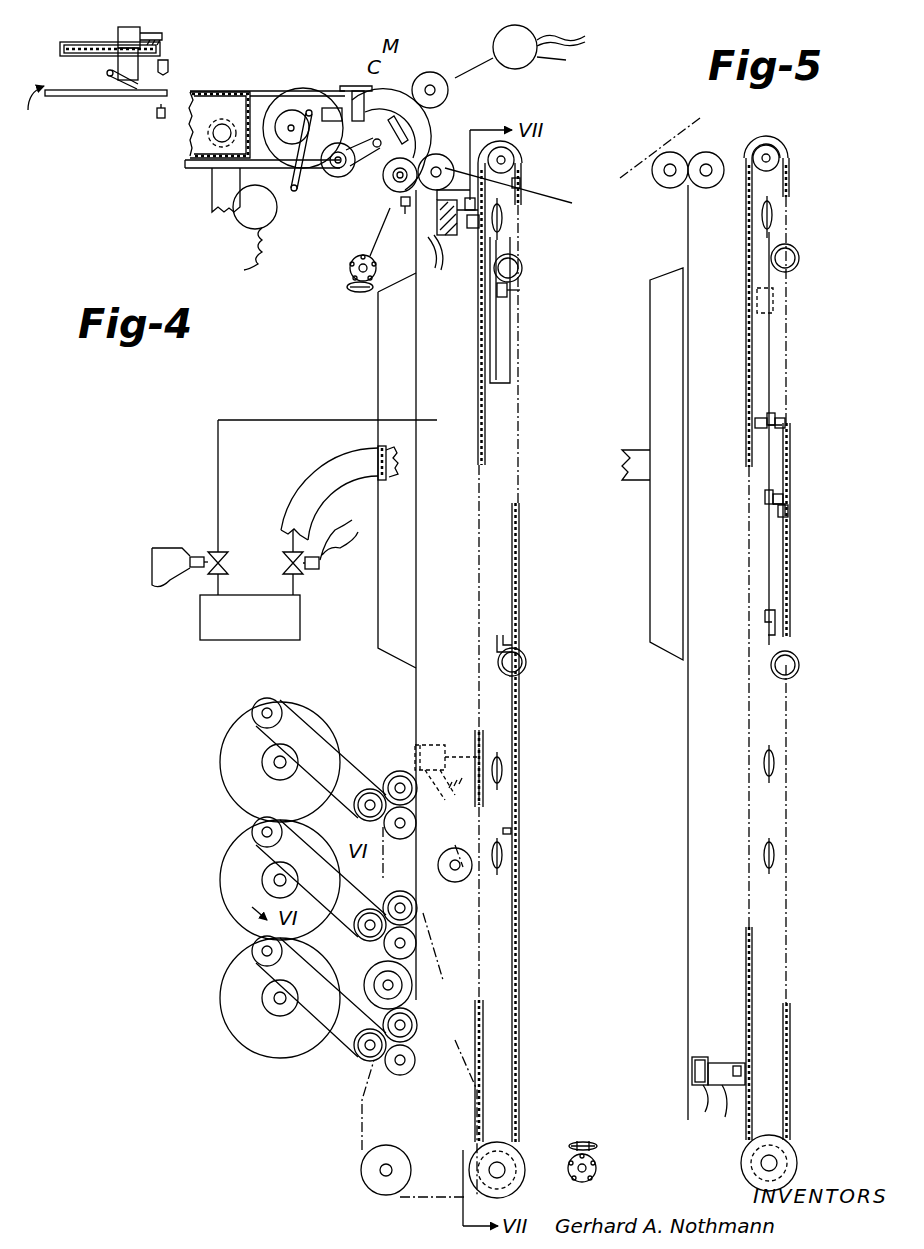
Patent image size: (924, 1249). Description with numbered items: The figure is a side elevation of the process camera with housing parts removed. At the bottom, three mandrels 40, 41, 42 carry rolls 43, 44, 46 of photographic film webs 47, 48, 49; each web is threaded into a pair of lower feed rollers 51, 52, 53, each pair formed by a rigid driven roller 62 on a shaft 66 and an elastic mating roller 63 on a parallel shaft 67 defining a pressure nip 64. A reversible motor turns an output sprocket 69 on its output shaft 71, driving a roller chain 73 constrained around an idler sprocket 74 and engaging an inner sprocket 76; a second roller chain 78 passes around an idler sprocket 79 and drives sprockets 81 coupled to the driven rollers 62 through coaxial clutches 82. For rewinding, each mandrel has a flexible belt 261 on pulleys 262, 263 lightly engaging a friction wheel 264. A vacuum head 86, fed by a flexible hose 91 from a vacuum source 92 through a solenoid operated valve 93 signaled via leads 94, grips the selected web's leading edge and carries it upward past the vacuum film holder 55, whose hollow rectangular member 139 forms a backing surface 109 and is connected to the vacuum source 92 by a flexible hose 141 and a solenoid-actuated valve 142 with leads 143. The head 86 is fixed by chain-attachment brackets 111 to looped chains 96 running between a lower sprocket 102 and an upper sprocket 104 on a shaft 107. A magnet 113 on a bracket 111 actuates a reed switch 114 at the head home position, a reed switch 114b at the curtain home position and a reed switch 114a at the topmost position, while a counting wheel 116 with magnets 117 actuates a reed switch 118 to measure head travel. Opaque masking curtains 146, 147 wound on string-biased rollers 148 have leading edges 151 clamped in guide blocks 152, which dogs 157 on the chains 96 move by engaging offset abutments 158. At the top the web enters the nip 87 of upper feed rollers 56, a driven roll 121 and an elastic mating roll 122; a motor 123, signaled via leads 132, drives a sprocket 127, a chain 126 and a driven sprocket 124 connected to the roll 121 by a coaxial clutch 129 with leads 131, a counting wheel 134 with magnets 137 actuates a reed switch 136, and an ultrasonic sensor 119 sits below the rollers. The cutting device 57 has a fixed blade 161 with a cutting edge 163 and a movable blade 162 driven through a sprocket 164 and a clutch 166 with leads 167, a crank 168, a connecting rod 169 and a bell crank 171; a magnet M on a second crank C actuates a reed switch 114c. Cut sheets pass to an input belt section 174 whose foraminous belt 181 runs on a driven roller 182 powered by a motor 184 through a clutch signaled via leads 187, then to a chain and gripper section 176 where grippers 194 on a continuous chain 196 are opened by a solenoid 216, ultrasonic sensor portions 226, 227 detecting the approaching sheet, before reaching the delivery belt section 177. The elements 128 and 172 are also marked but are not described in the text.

In FIG. 4, the continuous chain 196 is at (75, 45).
In FIG. 4, the solenoid 216 is at (118, 33).
In FIG. 4, the ultrasonic sensor portion 226 is at (167, 60).
In FIG. 4, the conveyor input belt section 174 is at (199, 88).
In FIG. 4, the grippers 194 is at (107, 73).
In FIG. 4, the chain and gripper section 176 is at (97, 108).
In FIG. 4, the ultrasonic sensor portion 227 is at (156, 114).
In FIG. 4, the driven roller 182 is at (283, 90).
In FIG. 4, the connecting rod 169 is at (247, 125).
In FIG. 4, the foraminous belt 181 is at (192, 165).
In FIG. 4, the motor 184 is at (217, 205).
In FIG. 4, the leads 187 is at (250, 263).
In FIG. 4, the crank 168 is at (300, 205).
In FIG. 4, the bell crank 171 is at (305, 89).
In FIG. 4, the leads 167 is at (312, 185).
In FIG. 4, the selectively operable clutch 166 is at (360, 157).
In FIG. 4, the movable cutting blade 162 is at (347, 86).
In FIG. 4, the cutting edge 163 is at (360, 88).
In FIG. 4, the cutting device 57 is at (352, 84).
In FIG. 4, the fixed cutting blade 161 is at (398, 118).
In FIG. 4, the leads 131 is at (430, 115).
In FIG. 4, the chain 126 is at (428, 140).
In FIG. 4, the sprocket 127 is at (448, 90).
In FIG. 4, the reed switch 114c is at (442, 57).
In FIG. 4, the motor 128 is at (496, 50).
In FIG. 4, the leads 132 is at (582, 34).
In FIG. 4, the motor 123 is at (572, 55).
In FIG. 4, the driven sprocket 124 is at (392, 185).
In FIG. 4, the upper feed rollers 56 is at (449, 147).
In FIG. 5, the upper feed rollers 56 is at (694, 192).
In FIG. 4, the driven roll 121 is at (345, 196).
In FIG. 5, the driven roll 121 is at (665, 156).
In FIG. 4, the sprocket 164 is at (336, 220).
In FIG. 4, the ultrasonic sensor 119 is at (403, 208).
In FIG. 4, the coaxial clutch 129 is at (415, 215).
In FIG. 4, the counting wheel 134 is at (350, 268).
In FIG. 4, the magnets 137 is at (347, 287).
In FIG. 4, the reed switch 136 is at (357, 294).
In FIG. 4, the flexible hose 91 is at (430, 262).
In FIG. 5, the flexible hose 91 is at (698, 1100).
In FIG. 4, the backing surface 109 is at (420, 527).
In FIG. 5, the backing surface 109 is at (690, 565).
In FIG. 4, the vacuum head 86 is at (441, 246).
In FIG. 5, the vacuum head 86 is at (706, 1053).
In FIG. 4, the magnet 113 is at (483, 268).
In FIG. 5, the magnet 113 is at (742, 1072).
In FIG. 4, the masking curtain 146 is at (492, 296).
In FIG. 5, the masking curtain 146 is at (772, 345).
In FIG. 4, the sprocket 104 is at (520, 153).
In FIG. 4, the shaft 107 is at (508, 163).
In FIG. 4, the leading edge 151 is at (527, 172).
In FIG. 5, the leading edge 151 is at (752, 433).
In FIG. 4, the elastic mating roll 122 is at (528, 193).
In FIG. 5, the elastic mating roll 122 is at (700, 152).
In FIG. 4, the reed switch 114a is at (503, 218).
In FIG. 5, the reed switch 114a is at (773, 218).
In FIG. 4, the string-biased roller 148 is at (523, 268).
In FIG. 5, the string-biased roller 148 is at (800, 258).
In FIG. 4, the guide block 152 is at (512, 290).
In FIG. 5, the guide block 152 is at (770, 424).
In FIG. 4, the looped chain 96 is at (520, 583).
In FIG. 5, the looped chain 96 is at (792, 585).
In FIG. 4, the vacuum film holder 55 is at (382, 403).
In FIG. 5, the vacuum film holder 55 is at (648, 592).
In FIG. 4, the hollow rectangular member 139 is at (378, 456).
In FIG. 4, the flexible hose 141 is at (322, 480).
In FIG. 5, the flexible hose 141 is at (640, 482).
In FIG. 4, the solenoid operated valve 93 is at (226, 560).
In FIG. 4, the leads 94 is at (171, 575).
In FIG. 4, the vacuum source 92 is at (200, 630).
In FIG. 4, the solenoid-actuated valve 142 is at (318, 568).
In FIG. 4, the leads 143 is at (330, 525).
In FIG. 4, the film web 48 is at (418, 662).
In FIG. 4, the masking curtain 147 is at (500, 660).
In FIG. 5, the masking curtain 147 is at (766, 642).
In FIG. 4, the mandrel 40 is at (262, 765).
In FIG. 4, the roll of photographic film 43 is at (250, 732).
In FIG. 4, the friction wheel 264 is at (265, 756).
In FIG. 4, the mandrel 41 is at (262, 880).
In FIG. 4, the roll of photographic film 44 is at (245, 852).
In FIG. 4, the mandrel 42 is at (262, 998).
In FIG. 4, the roll of photographic film 46 is at (243, 975).
In FIG. 4, the pulley 262 is at (262, 700).
In FIG. 4, the flexible belt 261 is at (298, 712).
In FIG. 4, the pulley 263 is at (363, 788).
In FIG. 4, the driven roller 62 is at (392, 775).
In FIG. 4, the elastic mating roller 63 is at (400, 840).
In FIG. 4, the pressure nip 64 is at (450, 848).
In FIG. 4, the sprockets 81 is at (418, 906).
In FIG. 4, the lower feed rollers 52 is at (448, 920).
In FIG. 4, the film web 47 is at (328, 812).
In FIG. 4, the lower feed rollers 51 is at (403, 765).
In FIG. 4, the idler sprocket 79 is at (460, 877).
In FIG. 4, the second roller chain 78 is at (455, 917).
In FIG. 4, the reed switch 114 is at (504, 768).
In FIG. 5, the reed switch 114 is at (775, 768).
In FIG. 4, the reed switch 114b is at (504, 853).
In FIG. 5, the reed switch 114b is at (775, 857).
In FIG. 4, the inner sprocket 76 is at (414, 983).
In FIG. 4, the shaft 66 is at (412, 1018).
In FIG. 4, the coaxial clutch 82 is at (405, 1026).
In FIG. 4, the guide 172 is at (378, 958).
In FIG. 4, the delivery belt section 177 is at (392, 975).
In FIG. 4, the film web 49 is at (312, 1068).
In FIG. 4, the parallel shaft 67 is at (387, 1066).
In FIG. 4, the lower feed rollers 53 is at (402, 1080).
In FIG. 4, the roller chain 73 is at (360, 1135).
In FIG. 4, the idler sprocket 74 is at (362, 1175).
In FIG. 4, the motor output sprocket 69 is at (515, 1158).
In FIG. 5, the motor output sprocket 69 is at (798, 1163).
In FIG. 4, the motor output shaft 71 is at (508, 1177).
In FIG. 4, the sprocket 102 is at (500, 1143).
In FIG. 5, the sprocket 102 is at (790, 1142).
In FIG. 4, the reed switch 118 is at (584, 1141).
In FIG. 4, the counting wheel 116 is at (597, 1166).
In FIG. 4, the magnets 117 is at (588, 1182).
In FIG. 5, the nip 87 is at (683, 190).
In FIG. 5, the dogs 157 is at (750, 416).
In FIG. 5, the offset abutments 158 is at (758, 431).
In FIG. 5, the chain-attachment brackets 111 is at (724, 1118).